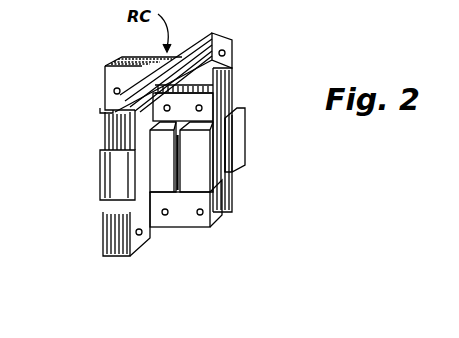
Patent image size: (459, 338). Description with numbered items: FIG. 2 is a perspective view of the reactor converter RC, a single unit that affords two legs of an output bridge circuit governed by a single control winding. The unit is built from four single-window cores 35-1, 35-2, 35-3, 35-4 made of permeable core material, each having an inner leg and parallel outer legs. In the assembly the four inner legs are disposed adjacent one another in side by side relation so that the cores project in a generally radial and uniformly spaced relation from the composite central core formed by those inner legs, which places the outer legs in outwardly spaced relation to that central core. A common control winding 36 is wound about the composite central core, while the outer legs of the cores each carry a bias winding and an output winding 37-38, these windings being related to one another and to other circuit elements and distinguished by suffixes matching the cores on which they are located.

The single-window core 35-1 is at (214, 33).
The single-window core 35-2 is at (104, 67).
The single-window core 35-3 is at (151, 235).
The single-window core 35-4 is at (222, 205).
The common control winding 36 is at (167, 192).
The bias winding and output winding 37-38 is at (103, 178).